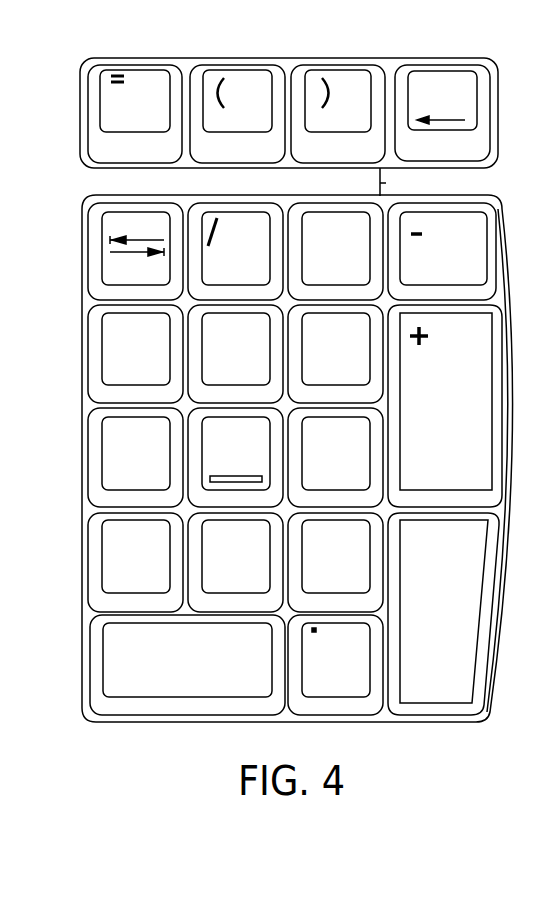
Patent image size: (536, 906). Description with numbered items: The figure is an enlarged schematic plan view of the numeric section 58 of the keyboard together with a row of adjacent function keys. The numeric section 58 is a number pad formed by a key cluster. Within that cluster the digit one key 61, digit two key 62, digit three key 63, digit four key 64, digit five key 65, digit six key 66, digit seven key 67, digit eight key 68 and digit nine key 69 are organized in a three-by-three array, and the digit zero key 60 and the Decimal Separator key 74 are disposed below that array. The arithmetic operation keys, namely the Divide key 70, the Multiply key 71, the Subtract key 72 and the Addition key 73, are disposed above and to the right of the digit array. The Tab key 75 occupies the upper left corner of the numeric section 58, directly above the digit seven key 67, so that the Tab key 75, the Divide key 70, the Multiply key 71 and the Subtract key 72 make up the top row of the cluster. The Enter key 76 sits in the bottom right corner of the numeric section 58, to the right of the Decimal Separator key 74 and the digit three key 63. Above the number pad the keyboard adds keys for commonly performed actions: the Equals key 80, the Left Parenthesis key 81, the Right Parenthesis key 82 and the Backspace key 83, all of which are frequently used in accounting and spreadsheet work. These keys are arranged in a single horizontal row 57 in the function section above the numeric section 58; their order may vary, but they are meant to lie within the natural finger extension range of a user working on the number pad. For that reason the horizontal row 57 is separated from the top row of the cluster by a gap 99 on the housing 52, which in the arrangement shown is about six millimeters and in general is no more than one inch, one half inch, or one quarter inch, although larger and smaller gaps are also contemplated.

The housing 52 is at (125, 184).
The horizontal row 57 is at (88, 127).
The numeric section 58 is at (120, 748).
The gap 99 is at (399, 182).
The Digit 0 key 60 is at (210, 671).
The Digit 1 key 61 is at (152, 583).
The Digit 2 key 62 is at (252, 583).
The Digit 3 key 63 is at (352, 583).
The Digit 4 key 64 is at (152, 478).
The Digit 5 key 65 is at (258, 470).
The Digit 6 key 66 is at (352, 478).
The Digit 7 key 67 is at (150, 375).
The Digit 8 key 68 is at (252, 375).
The Digit 9 key 69 is at (352, 375).
The Divide key 70 is at (252, 261).
The Multiply key 71 is at (352, 261).
The Subtract key 72 is at (459, 261).
The Addition key 73 is at (460, 418).
The Decimal Separator key 74 is at (350, 671).
The Tab key 75 is at (150, 281).
The Enter key 76 is at (454, 613).
The Equals key 80 is at (148, 121).
The Left Parenthesis key 81 is at (263, 121).
The Right Parenthesis key 82 is at (359, 121).
The Backspace key 83 is at (450, 71).